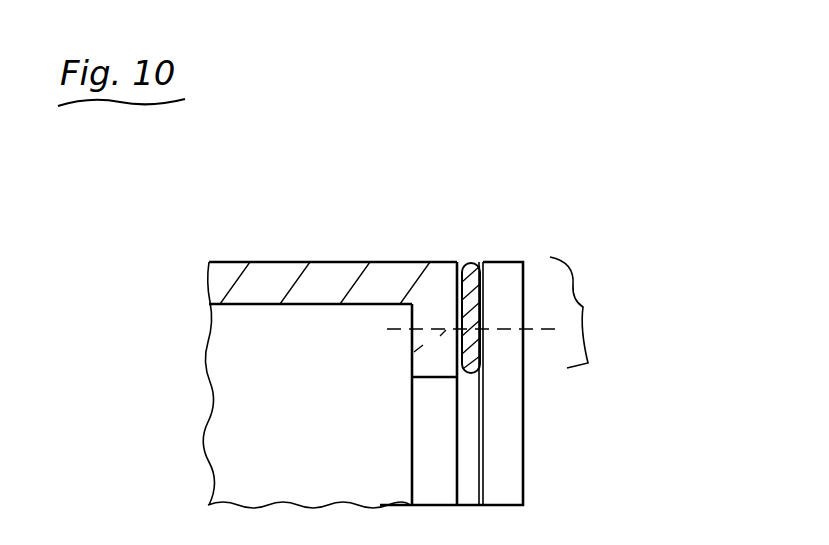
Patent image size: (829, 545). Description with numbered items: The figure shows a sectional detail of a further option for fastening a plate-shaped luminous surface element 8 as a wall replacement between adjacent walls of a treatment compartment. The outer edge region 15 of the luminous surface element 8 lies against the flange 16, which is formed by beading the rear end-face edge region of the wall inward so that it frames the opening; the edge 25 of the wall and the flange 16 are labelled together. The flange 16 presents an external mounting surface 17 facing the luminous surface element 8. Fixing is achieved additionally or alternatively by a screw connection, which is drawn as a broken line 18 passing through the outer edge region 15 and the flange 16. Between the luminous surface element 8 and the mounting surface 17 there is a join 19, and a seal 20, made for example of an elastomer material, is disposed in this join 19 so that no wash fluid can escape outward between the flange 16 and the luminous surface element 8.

The luminous surface element 8 is at (505, 425).
The outer edge region 15 is at (597, 306).
The flange 16 is at (430, 358).
The mounting surface 17 is at (484, 262).
The broken line 18 is at (426, 329).
The join 19 is at (472, 258).
The seal 20 is at (480, 353).
The edge 25 is at (292, 431).